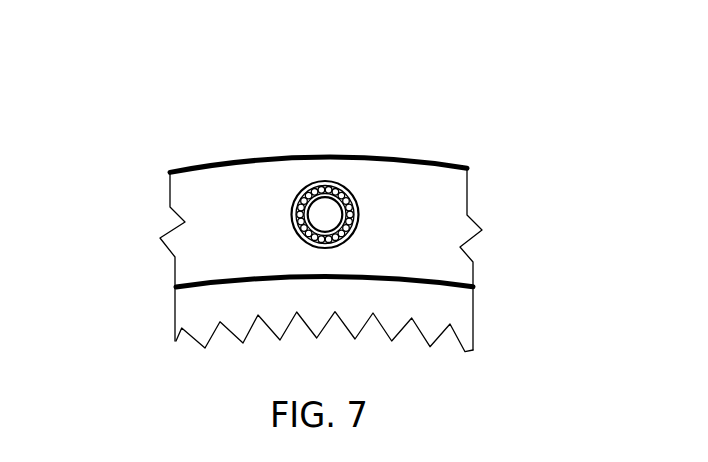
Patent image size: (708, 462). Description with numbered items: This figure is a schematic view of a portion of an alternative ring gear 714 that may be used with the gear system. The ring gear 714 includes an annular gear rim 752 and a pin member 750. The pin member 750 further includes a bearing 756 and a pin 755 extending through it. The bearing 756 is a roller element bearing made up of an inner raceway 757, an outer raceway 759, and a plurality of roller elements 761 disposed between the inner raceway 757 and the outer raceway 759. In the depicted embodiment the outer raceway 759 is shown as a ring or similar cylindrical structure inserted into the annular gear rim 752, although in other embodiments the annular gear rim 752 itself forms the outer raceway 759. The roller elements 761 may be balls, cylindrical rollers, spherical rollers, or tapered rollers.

The ring gear 714 is at (435, 67).
The pin member 750 is at (317, 186).
The annular gear rim 752 is at (190, 267).
The pin 755 is at (350, 238).
The bearing 756 is at (344, 182).
The inner raceway 757 is at (326, 215).
The outer raceway 759 is at (325, 182).
The roller elements 761 is at (304, 184).